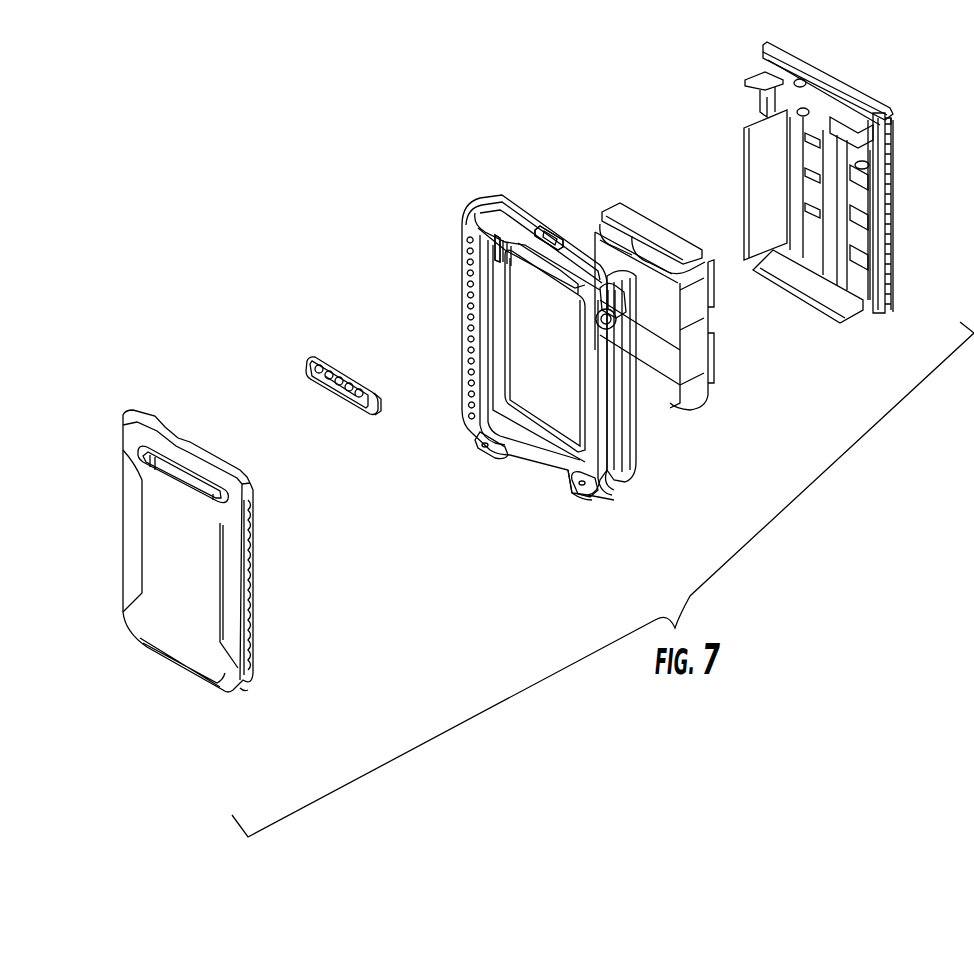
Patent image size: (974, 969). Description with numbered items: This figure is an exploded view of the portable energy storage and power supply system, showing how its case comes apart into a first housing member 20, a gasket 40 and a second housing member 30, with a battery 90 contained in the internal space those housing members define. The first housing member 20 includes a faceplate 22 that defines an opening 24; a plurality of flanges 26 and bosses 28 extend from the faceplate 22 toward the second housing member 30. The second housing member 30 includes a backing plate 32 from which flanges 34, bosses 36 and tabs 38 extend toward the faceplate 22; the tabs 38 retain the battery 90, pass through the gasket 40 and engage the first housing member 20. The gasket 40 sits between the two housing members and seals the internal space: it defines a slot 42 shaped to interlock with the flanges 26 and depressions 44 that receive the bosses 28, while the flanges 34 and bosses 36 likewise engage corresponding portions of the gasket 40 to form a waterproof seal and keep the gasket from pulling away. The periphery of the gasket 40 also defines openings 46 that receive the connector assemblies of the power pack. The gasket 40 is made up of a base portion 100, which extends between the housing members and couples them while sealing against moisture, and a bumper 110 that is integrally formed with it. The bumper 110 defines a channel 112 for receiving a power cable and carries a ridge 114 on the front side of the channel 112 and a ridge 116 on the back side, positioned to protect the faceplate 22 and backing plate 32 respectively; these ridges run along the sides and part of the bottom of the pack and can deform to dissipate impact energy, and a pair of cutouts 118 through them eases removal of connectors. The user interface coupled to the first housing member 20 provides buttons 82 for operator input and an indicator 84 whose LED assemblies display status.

The first housing member 20 is at (182, 546).
The faceplate 22 is at (245, 688).
The opening 24 is at (192, 448).
The flanges 26 is at (255, 585).
The bosses 28 is at (258, 530).
The second housing member 30 is at (832, 202).
The backing plate 32 is at (889, 112).
The flanges 34 is at (868, 318).
The bosses 36 is at (894, 208).
The tabs 38 is at (745, 140).
The gasket 40 is at (607, 380).
The slot 42 is at (622, 483).
The depressions 44 is at (577, 496).
The openings 46 is at (525, 224).
The buttons 82 is at (152, 458).
The indicator 84 is at (372, 416).
The battery 90 is at (705, 407).
The base portion 100 is at (578, 265).
The bumper 110 is at (599, 510).
The channel 112 is at (626, 470).
The ridge 114 is at (592, 503).
The ridge 116 is at (634, 447).
The cutouts 118 is at (632, 306).